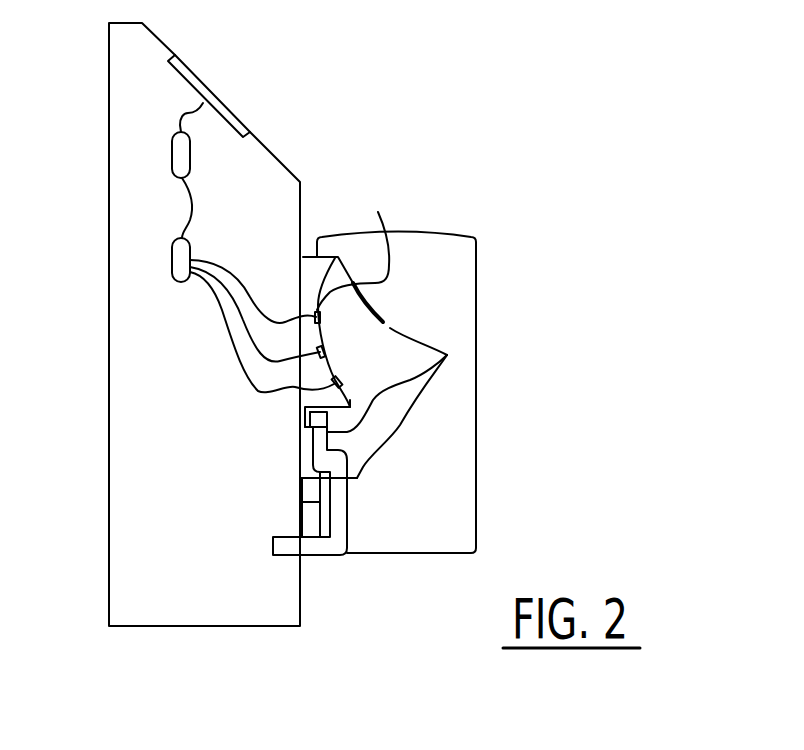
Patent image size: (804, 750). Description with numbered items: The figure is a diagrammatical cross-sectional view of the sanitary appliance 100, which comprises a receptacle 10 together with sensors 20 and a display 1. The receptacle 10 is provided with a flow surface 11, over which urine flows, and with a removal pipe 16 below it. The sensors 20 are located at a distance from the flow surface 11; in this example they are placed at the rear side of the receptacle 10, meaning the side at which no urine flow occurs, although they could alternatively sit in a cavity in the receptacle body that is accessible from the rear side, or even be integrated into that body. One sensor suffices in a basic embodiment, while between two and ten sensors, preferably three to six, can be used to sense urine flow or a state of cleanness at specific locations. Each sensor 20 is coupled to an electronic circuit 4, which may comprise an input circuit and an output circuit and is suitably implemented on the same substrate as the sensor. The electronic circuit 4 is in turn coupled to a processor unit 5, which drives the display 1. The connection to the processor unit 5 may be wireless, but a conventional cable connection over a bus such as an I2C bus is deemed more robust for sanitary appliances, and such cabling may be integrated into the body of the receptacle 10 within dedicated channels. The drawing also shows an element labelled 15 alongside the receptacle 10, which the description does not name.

The sanitary appliance 100 is at (537, 117).
The display 1 is at (188, 73).
The electronic circuit 4 is at (172, 253).
The processor unit 5 is at (173, 152).
The receptacle 10 is at (392, 405).
The flow surface 11 is at (353, 244).
The container 15 is at (452, 283).
The removal pipe 16 is at (340, 510).
The sensors 20 is at (315, 313).